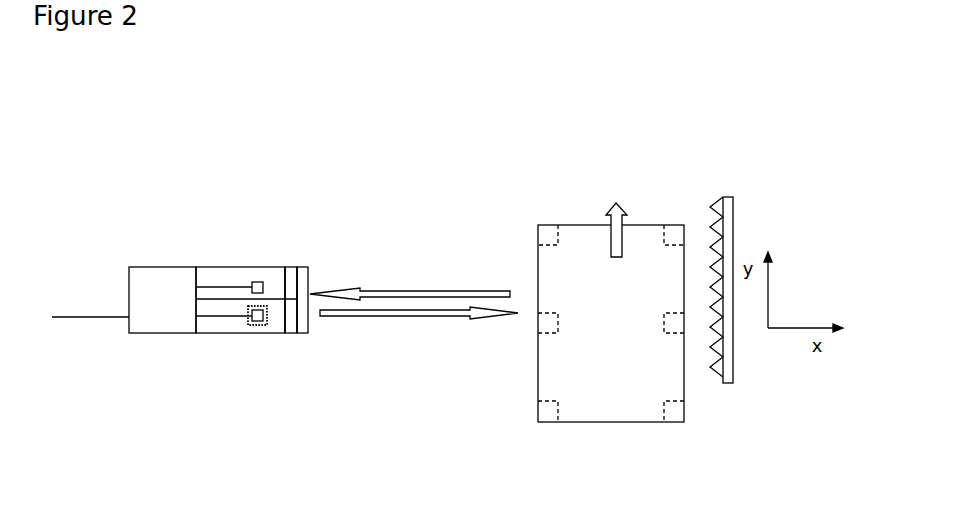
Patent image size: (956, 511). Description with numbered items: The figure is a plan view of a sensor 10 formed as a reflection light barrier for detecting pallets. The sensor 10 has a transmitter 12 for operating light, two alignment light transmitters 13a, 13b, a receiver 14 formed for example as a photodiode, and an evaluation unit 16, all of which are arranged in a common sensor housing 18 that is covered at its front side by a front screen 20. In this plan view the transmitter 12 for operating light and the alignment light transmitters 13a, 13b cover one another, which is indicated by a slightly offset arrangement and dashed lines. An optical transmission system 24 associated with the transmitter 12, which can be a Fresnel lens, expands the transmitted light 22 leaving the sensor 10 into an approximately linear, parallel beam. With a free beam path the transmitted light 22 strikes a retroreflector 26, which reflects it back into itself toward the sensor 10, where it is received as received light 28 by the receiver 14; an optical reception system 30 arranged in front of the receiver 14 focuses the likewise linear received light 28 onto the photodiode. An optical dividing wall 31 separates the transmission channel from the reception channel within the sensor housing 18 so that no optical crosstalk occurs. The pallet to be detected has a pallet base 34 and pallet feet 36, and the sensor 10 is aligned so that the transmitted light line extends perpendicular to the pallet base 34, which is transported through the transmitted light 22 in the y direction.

The sensor 10 is at (169, 199).
The transmitter for operating light 12 is at (255, 322).
The alignment light transmitter 13a is at (248, 307).
The alignment light transmitter 13b is at (267, 318).
The receiver 14 is at (258, 282).
The evaluation unit 16 is at (152, 306).
The sensor housing 18 is at (218, 330).
The front screen 20 is at (303, 318).
The transmitted light 22 is at (442, 316).
The optical transmission system 24 is at (292, 332).
The retroreflector 26 is at (739, 338).
The received light 28 is at (408, 291).
The optical reception system 30 is at (296, 267).
The optical dividing wall 31 is at (280, 289).
The pallet base 34 is at (643, 225).
The pallet feet 36 is at (552, 233).